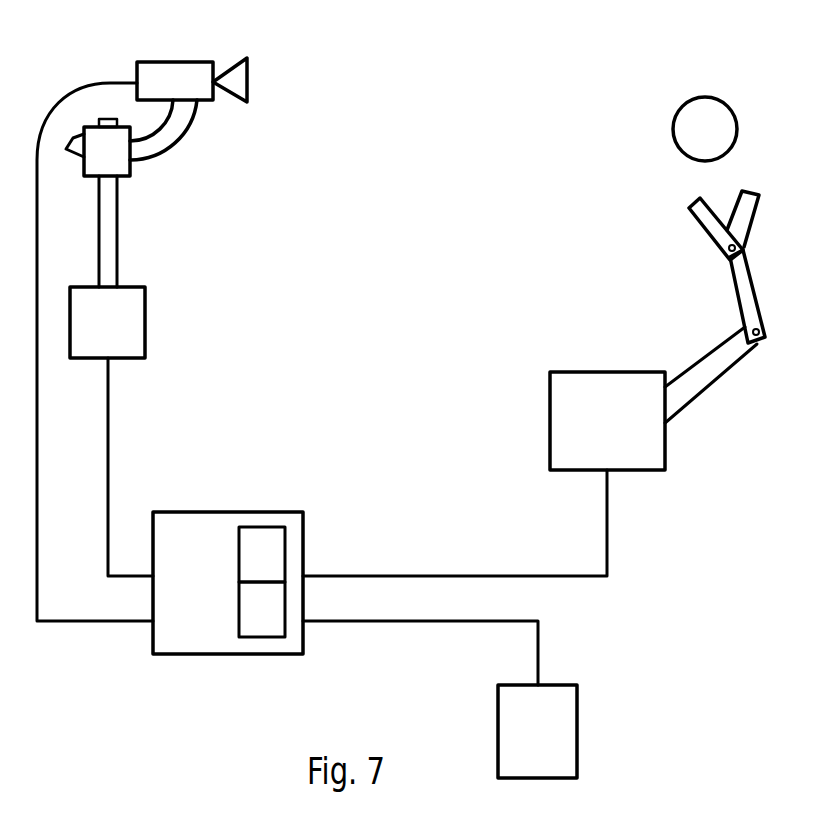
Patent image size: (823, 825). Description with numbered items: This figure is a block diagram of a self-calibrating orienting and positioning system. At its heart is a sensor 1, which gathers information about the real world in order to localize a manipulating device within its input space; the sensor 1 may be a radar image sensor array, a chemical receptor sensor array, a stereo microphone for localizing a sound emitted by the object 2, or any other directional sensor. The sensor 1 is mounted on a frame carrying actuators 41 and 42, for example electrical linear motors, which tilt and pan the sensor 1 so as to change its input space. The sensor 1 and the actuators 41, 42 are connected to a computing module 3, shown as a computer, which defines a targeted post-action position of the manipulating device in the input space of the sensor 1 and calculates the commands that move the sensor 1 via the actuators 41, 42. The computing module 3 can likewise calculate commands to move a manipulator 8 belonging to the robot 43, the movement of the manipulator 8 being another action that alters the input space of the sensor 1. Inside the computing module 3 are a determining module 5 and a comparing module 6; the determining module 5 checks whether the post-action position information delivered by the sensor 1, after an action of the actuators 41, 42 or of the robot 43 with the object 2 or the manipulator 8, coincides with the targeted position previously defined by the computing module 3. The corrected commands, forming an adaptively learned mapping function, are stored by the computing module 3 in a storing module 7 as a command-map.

The sensor 1 is at (184, 62).
The object 2 is at (737, 129).
The computing module 3 is at (210, 655).
The determining module 5 is at (286, 548).
The comparing module 6 is at (286, 632).
The storing module 7 is at (578, 732).
The manipulator 8 is at (746, 219).
The actuator 41 is at (146, 325).
The actuator 42 is at (131, 170).
The robot 43 is at (549, 432).